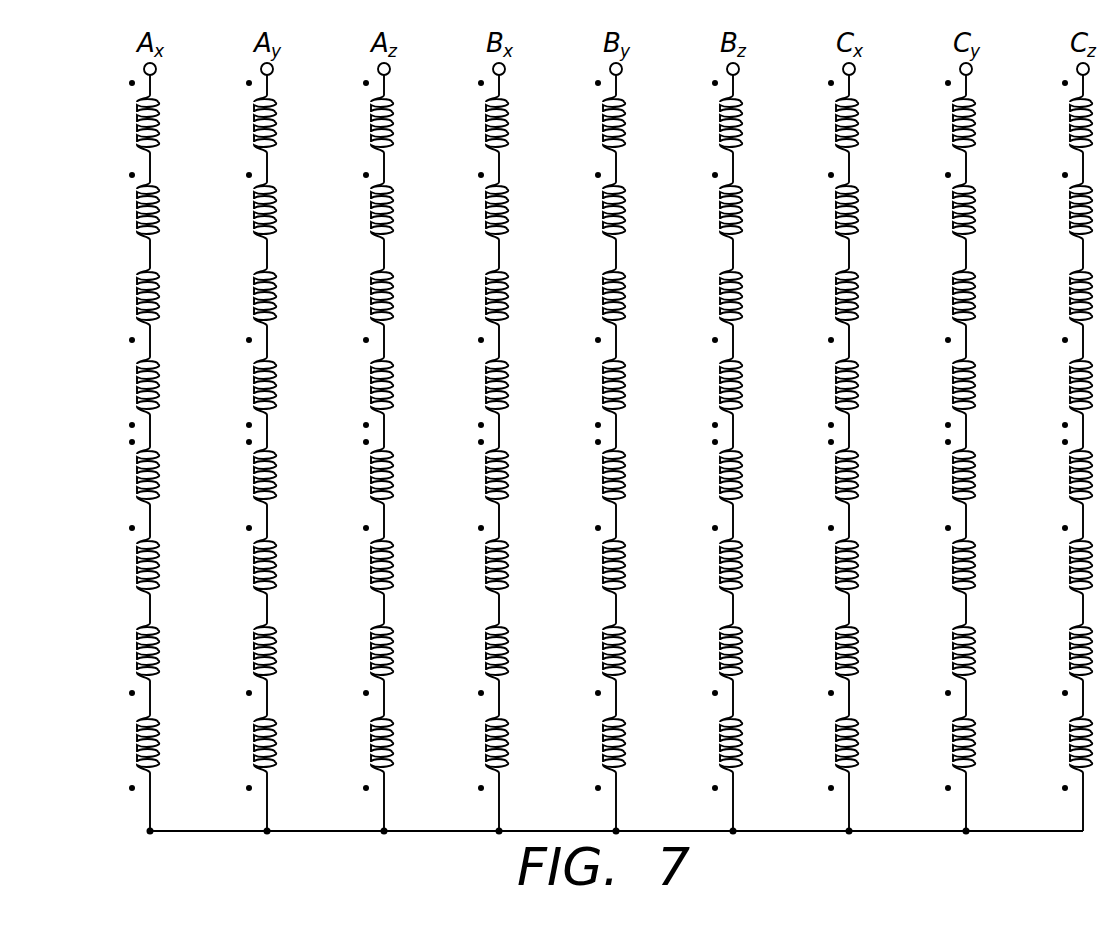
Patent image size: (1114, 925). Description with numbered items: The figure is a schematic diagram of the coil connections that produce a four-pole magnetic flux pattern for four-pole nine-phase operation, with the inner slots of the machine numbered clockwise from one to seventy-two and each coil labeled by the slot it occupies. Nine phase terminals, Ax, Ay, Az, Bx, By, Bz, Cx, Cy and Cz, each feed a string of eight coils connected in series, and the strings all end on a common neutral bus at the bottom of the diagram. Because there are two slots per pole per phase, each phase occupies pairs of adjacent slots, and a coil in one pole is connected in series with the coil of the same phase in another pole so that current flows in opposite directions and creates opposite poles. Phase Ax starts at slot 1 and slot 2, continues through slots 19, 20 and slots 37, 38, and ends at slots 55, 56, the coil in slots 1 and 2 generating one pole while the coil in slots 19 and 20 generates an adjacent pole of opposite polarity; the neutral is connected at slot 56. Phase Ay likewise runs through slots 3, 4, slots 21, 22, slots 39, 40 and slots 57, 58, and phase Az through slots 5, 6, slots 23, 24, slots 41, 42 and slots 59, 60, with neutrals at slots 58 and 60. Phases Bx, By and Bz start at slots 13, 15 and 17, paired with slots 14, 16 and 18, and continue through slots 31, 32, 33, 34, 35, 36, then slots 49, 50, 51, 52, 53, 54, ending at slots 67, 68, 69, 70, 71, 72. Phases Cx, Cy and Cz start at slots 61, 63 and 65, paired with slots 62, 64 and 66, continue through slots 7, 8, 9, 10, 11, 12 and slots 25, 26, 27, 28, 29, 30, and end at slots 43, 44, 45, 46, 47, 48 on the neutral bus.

The slot 1 is at (135, 124).
The slot 2 is at (135, 211).
The slot 3 is at (252, 124).
The slot 4 is at (252, 211).
The slot 5 is at (369, 124).
The slot 6 is at (369, 211).
The slot 7 is at (834, 297).
The slot 8 is at (834, 386).
The slot 9 is at (951, 297).
The slot 10 is at (943, 386).
The slot 11 is at (1060, 297).
The slot 12 is at (1060, 386).
The slot 13 is at (476, 124).
The slot 14 is at (476, 211).
The slot 15 is at (593, 124).
The slot 16 is at (593, 211).
The slot 17 is at (710, 124).
The slot 18 is at (710, 211).
The slot 19 is at (127, 297).
The slot 20 is at (127, 386).
The slot 21 is at (244, 297).
The slot 22 is at (244, 386).
The slot 23 is at (361, 297).
The slot 24 is at (361, 386).
The slot 25 is at (826, 476).
The slot 26 is at (826, 566).
The slot 27 is at (943, 476).
The slot 28 is at (943, 566).
The slot 29 is at (1060, 476).
The slot 30 is at (1060, 566).
The slot 31 is at (476, 297).
The slot 32 is at (476, 386).
The slot 33 is at (593, 297).
The slot 34 is at (593, 386).
The slot 35 is at (710, 297).
The slot 36 is at (710, 386).
The slot 37 is at (127, 476).
The slot 38 is at (127, 566).
The slot 39 is at (244, 476).
The slot 40 is at (244, 566).
The slot 41 is at (361, 476).
The slot 42 is at (361, 566).
The slot 43 is at (826, 652).
The slot 44 is at (826, 744).
The slot 45 is at (943, 652).
The slot 46 is at (943, 744).
The slot 47 is at (1060, 652).
The slot 48 is at (1060, 744).
The slot 49 is at (476, 476).
The slot 50 is at (476, 566).
The slot 51 is at (593, 476).
The slot 52 is at (593, 566).
The slot 53 is at (710, 476).
The slot 54 is at (710, 566).
The slot 55 is at (127, 652).
The slot 56 is at (127, 744).
The slot 57 is at (244, 652).
The slot 58 is at (244, 744).
The slot 59 is at (361, 652).
The slot 60 is at (361, 744).
The slot 61 is at (826, 124).
The slot 62 is at (826, 211).
The slot 63 is at (943, 124).
The slot 64 is at (943, 211).
The slot 65 is at (1060, 124).
The slot 66 is at (1060, 211).
The slot 67 is at (476, 652).
The slot 68 is at (476, 744).
The slot 69 is at (593, 652).
The slot 70 is at (593, 744).
The slot 71 is at (710, 652).
The slot 72 is at (710, 744).